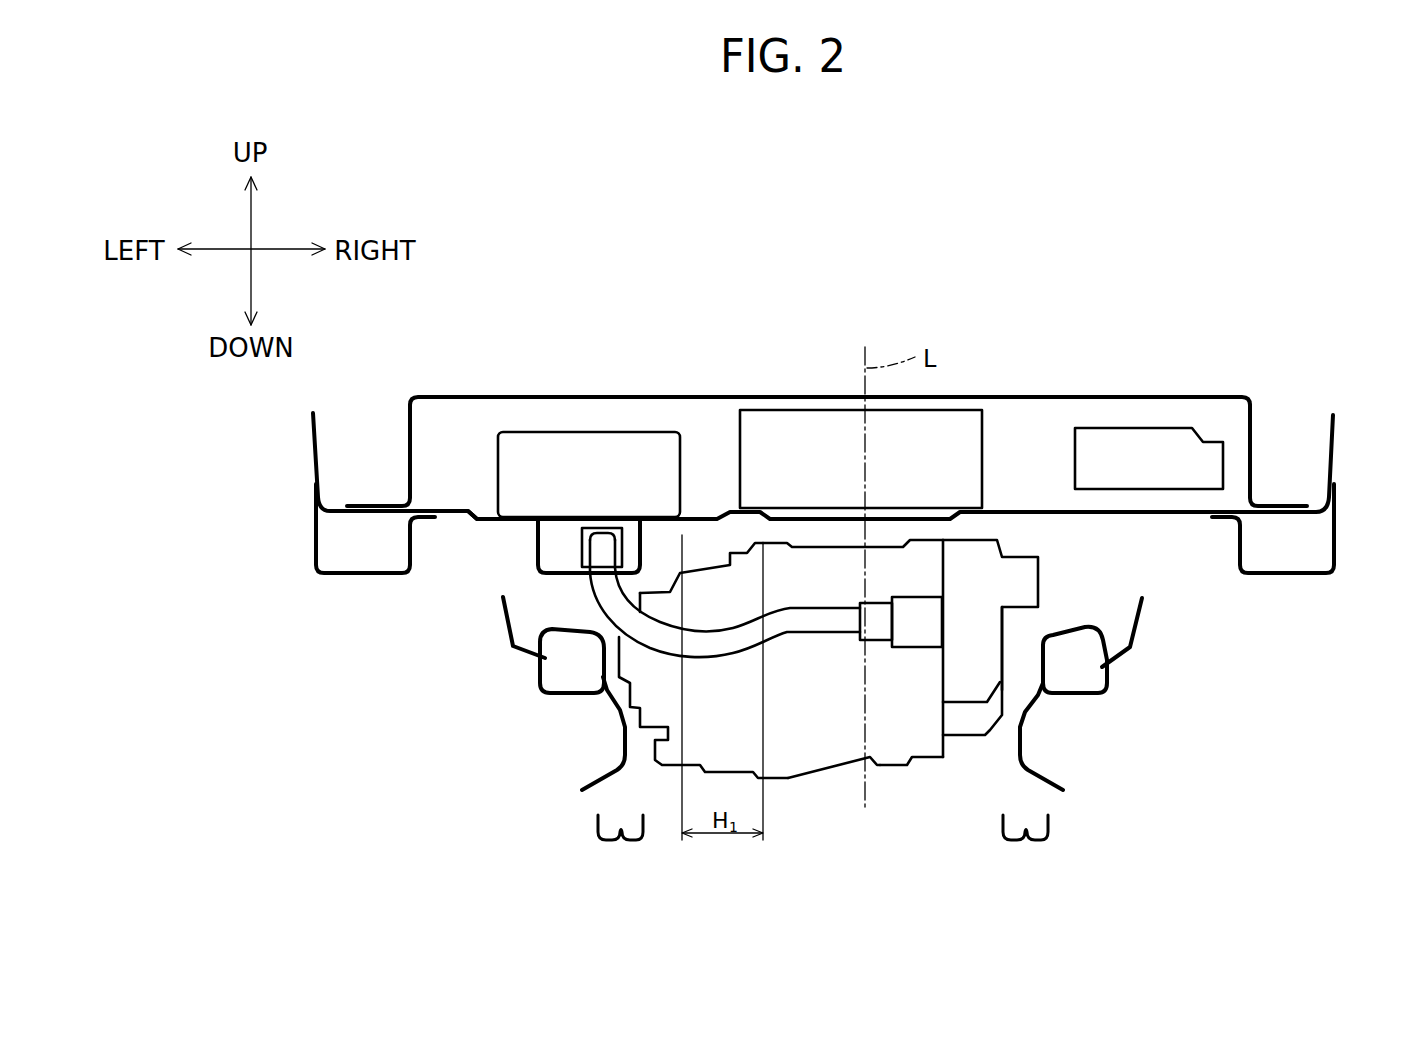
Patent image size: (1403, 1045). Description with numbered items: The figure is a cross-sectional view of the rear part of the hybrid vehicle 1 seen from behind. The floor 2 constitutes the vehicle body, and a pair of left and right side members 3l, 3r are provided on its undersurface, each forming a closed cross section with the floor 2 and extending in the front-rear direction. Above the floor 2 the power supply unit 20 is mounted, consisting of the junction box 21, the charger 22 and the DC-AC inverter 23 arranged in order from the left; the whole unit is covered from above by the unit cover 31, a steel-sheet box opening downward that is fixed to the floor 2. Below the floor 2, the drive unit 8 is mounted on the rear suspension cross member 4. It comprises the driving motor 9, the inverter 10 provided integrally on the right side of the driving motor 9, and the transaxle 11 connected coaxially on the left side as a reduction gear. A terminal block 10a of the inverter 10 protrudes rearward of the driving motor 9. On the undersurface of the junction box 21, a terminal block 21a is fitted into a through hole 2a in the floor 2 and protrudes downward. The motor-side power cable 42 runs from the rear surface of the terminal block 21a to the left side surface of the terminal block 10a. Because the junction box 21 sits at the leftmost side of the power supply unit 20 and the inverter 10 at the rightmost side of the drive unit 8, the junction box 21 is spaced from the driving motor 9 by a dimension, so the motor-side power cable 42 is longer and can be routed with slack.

The hybrid vehicle 1 is at (1039, 219).
The floor 2 is at (827, 459).
The through hole 2a is at (535, 515).
The left side member 3l is at (313, 538).
The right side member 3r is at (1335, 533).
The rear suspension cross member 4 is at (623, 740).
The drive unit 8 is at (990, 895).
The driving motor 9 is at (890, 740).
The inverter 10 is at (996, 720).
The terminal block 10a is at (988, 657).
The transaxle 11 is at (747, 735).
The power supply unit 20 is at (1040, 303).
The junction box 21 is at (645, 442).
The terminal block 21a is at (557, 547).
The charger 22 is at (800, 437).
The DC-AC inverter 23 is at (1105, 442).
The unit cover 31 is at (512, 397).
The motor-side power cable 42 is at (808, 633).